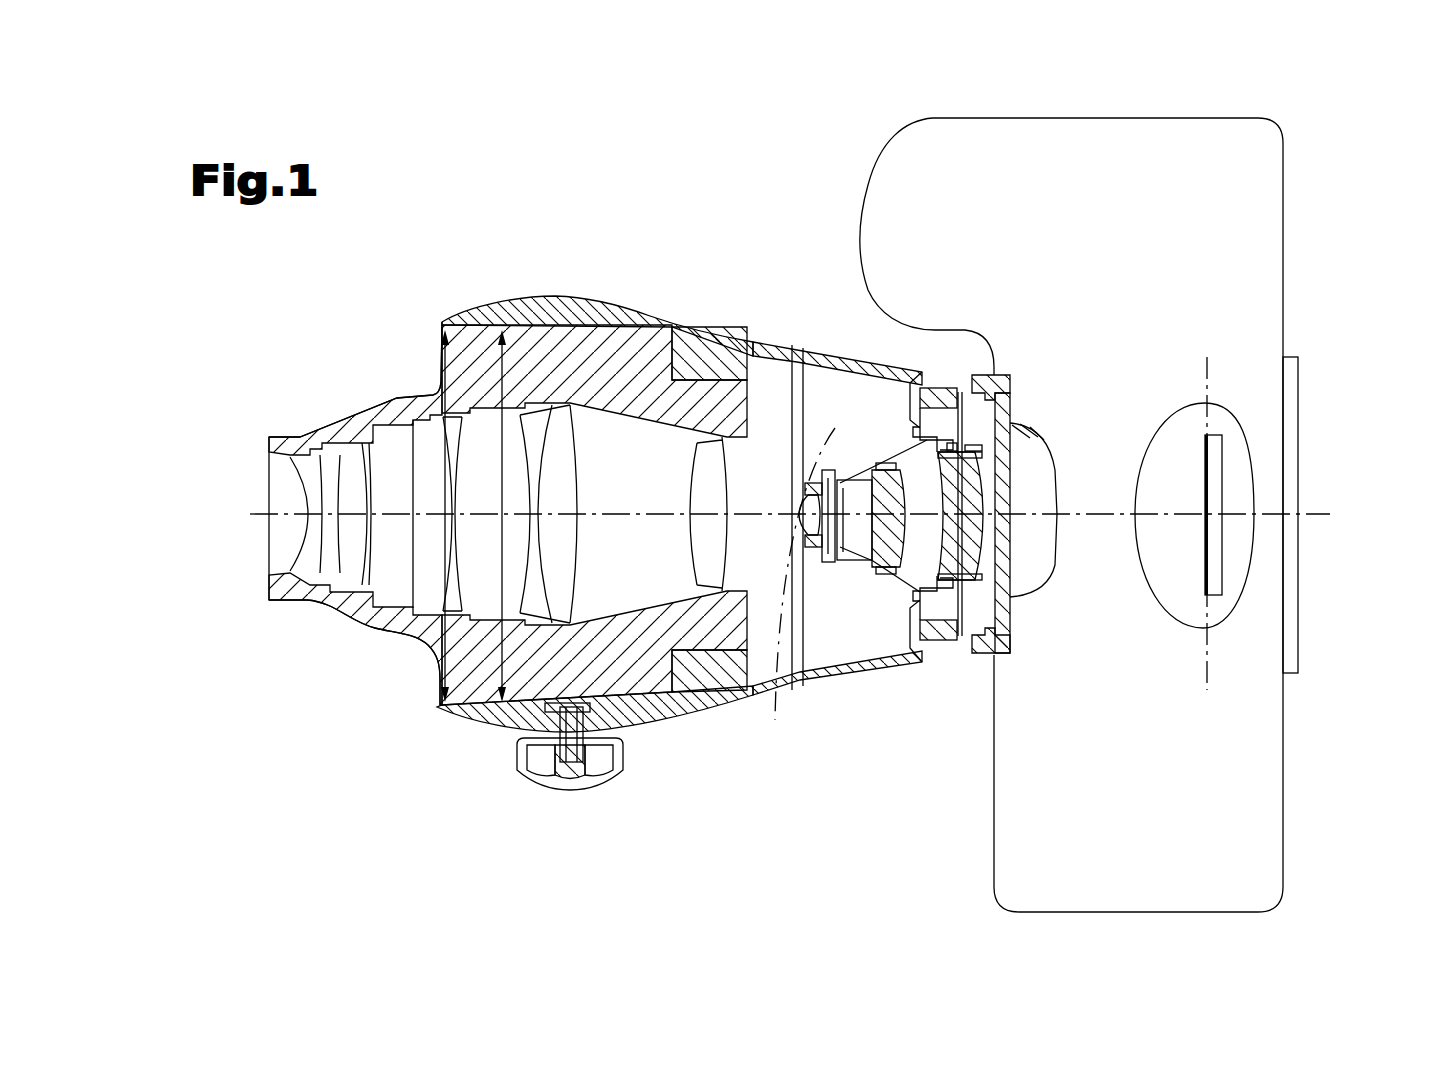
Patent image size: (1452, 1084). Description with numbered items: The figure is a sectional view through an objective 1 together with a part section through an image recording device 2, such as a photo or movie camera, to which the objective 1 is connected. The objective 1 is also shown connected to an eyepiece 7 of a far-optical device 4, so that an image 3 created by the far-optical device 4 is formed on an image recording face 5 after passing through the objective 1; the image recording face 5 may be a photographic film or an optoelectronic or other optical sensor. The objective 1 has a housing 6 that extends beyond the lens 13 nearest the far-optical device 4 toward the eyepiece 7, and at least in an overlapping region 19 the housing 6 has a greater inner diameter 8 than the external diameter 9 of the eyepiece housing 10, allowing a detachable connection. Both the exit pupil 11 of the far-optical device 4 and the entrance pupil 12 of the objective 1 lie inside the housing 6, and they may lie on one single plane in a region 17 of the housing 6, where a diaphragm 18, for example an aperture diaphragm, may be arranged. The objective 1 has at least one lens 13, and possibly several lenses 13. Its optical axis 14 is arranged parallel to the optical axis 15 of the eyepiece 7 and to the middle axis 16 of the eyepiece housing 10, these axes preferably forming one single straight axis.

The objective 1 is at (746, 182).
The image recording device 2 is at (1320, 118).
The image 3 is at (1197, 560).
The far-optical device 4 is at (265, 352).
The image recording face 5 is at (1197, 683).
The housing 6 is at (706, 712).
The eyepiece 7 is at (474, 774).
The inner diameter 8 is at (443, 640).
The external diameter 9 is at (517, 665).
The eyepiece housing 10 is at (357, 428).
The exit pupil 11 is at (796, 468).
The entrance pupil 12 is at (850, 562).
The lens 13 is at (814, 578).
The optical axis 14 is at (776, 700).
The optical axis 15 is at (250, 507).
The middle axis 16 is at (1318, 510).
The region 17 is at (830, 470).
The diaphragm 18 is at (826, 466).
The overlapping region 19 is at (442, 317).